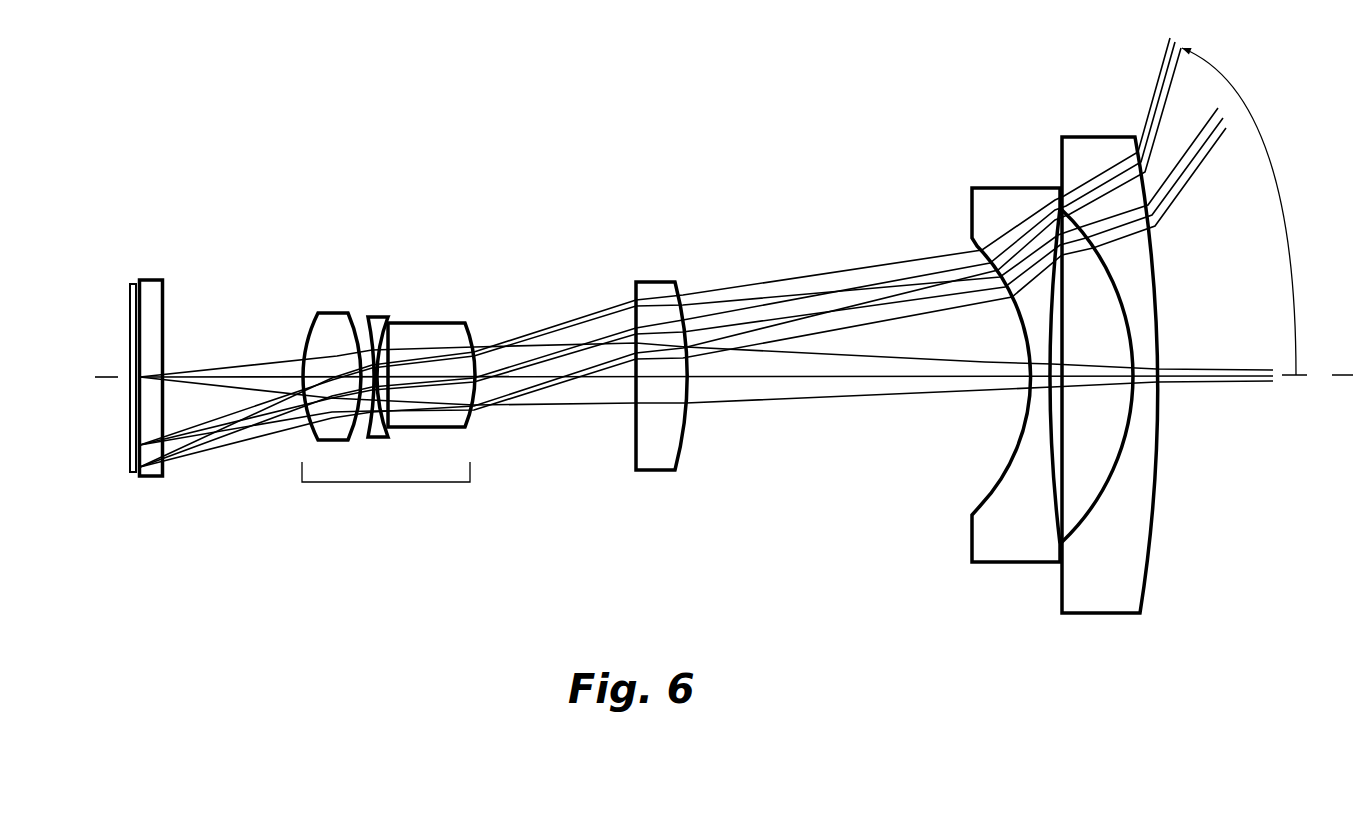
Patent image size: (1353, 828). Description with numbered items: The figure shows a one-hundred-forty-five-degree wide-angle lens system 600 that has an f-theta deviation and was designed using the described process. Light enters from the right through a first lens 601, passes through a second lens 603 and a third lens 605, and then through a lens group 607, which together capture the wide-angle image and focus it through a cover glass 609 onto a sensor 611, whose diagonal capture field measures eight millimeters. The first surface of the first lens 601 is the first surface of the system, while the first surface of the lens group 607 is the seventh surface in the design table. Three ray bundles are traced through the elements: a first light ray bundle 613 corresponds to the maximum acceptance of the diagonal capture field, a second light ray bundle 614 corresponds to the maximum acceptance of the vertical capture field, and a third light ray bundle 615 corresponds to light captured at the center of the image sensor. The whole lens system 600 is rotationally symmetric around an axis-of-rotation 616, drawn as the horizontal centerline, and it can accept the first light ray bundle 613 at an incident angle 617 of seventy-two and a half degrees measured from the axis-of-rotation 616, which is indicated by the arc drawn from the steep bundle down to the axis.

The wide-angle lens system 600 is at (222, 555).
The first lens 601 is at (1128, 588).
The second lens 603 is at (1042, 542).
The third lens 605 is at (657, 281).
The lens group 607 is at (400, 482).
The cover glass 609 is at (163, 279).
The sensor 611 is at (128, 343).
The first light ray bundle 613 is at (1178, 72).
The second light ray bundle 614 is at (1225, 145).
The third light ray bundle 615 is at (1228, 383).
The axis-of-rotation 616 is at (110, 380).
The incident angle 617 is at (1296, 293).